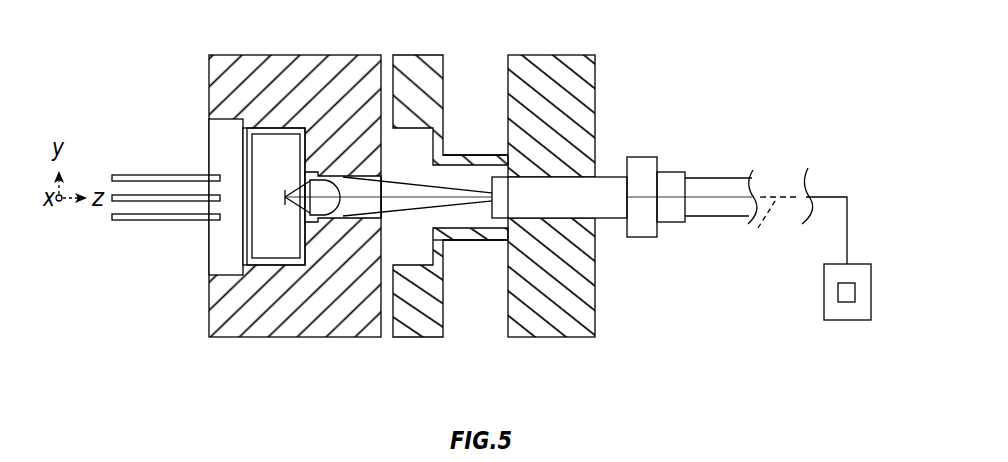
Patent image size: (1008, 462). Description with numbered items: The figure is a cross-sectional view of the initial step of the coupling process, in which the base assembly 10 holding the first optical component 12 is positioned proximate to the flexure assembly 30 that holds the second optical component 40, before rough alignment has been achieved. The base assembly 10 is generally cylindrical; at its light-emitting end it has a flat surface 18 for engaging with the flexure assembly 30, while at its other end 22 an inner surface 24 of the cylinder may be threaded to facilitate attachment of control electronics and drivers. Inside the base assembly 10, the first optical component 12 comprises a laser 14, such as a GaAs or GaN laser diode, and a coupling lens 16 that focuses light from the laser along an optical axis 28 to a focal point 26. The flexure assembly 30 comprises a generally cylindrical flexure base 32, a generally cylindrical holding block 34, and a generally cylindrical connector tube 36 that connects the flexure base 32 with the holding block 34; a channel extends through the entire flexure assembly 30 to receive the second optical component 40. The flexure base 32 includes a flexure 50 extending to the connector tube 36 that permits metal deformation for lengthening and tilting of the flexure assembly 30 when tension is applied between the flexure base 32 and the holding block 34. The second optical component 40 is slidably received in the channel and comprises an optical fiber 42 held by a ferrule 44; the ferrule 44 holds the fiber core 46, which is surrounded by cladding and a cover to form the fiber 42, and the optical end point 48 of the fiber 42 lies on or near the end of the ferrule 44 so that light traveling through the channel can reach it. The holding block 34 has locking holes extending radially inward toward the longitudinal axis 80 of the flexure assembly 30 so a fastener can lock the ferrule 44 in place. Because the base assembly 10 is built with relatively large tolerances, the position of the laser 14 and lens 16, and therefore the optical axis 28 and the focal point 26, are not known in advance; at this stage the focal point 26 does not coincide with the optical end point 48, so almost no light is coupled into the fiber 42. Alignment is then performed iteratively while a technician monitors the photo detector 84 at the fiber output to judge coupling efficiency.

The base assembly 10 is at (432, 168).
The first optical component 12 is at (290, 224).
The laser 14 is at (286, 198).
The coupling lens 16 is at (320, 184).
The flat surface 18 is at (383, 163).
The other end 22 is at (209, 84).
The inner surface 24 is at (214, 121).
The focal point 26 is at (532, 191).
The optical axis 28 is at (385, 199).
The flexure assembly 30 is at (504, 195).
The flexure base 32 is at (420, 343).
The holding block 34 is at (547, 343).
The connector tube 36 is at (496, 246).
The second optical component 40 is at (662, 229).
The optical fiber 42 is at (740, 171).
The ferrule 44 is at (605, 177).
The fiber core 46 is at (693, 195).
The optical end point 48 is at (494, 203).
The flexure 50 is at (440, 244).
The longitudinal axis 80 is at (762, 231).
The photo detector 84 is at (833, 313).